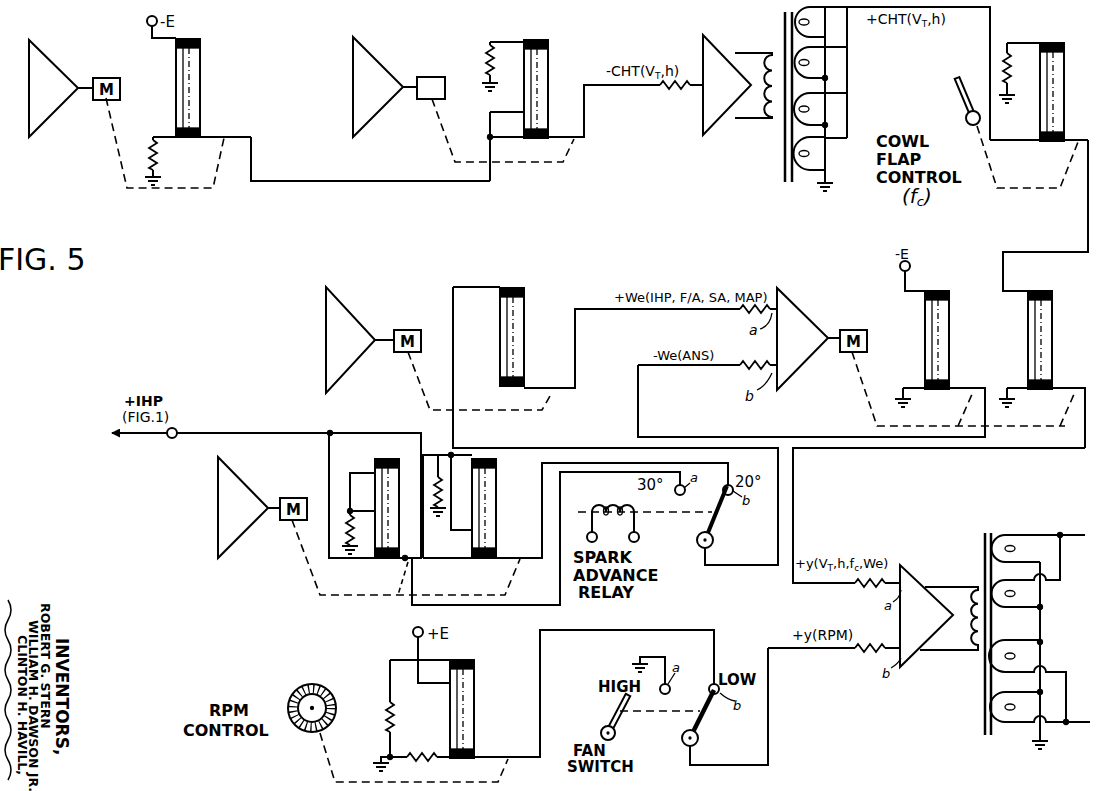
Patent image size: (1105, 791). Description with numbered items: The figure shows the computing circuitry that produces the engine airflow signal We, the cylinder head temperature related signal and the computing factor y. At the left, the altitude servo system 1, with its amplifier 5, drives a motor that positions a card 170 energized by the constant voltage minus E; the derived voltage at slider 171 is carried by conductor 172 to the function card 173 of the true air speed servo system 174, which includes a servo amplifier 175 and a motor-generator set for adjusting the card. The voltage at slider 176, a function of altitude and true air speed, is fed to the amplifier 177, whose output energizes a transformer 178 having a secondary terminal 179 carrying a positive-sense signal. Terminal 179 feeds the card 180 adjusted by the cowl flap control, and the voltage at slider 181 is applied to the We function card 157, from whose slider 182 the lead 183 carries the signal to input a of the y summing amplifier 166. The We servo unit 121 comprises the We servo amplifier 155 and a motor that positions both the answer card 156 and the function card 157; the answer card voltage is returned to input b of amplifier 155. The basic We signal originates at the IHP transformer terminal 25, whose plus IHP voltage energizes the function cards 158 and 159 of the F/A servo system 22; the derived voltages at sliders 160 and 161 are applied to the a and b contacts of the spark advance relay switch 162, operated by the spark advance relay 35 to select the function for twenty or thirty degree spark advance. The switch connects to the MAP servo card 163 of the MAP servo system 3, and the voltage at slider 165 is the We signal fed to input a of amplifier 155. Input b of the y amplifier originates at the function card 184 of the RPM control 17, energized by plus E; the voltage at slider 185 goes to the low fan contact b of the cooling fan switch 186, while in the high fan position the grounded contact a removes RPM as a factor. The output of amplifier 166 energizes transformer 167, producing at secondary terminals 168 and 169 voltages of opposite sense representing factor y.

The altitude servo system 1 is at (74, 86).
The MAP servo system 3 is at (430, 288).
The altitude amplifier 5 is at (47, 58).
The RPM control 17 is at (316, 689).
The F/A servo system 22 is at (304, 471).
The IHP transformer terminal 25 is at (178, 430).
The spark advance relay 35 is at (603, 505).
The We computing unit 121 is at (822, 330).
The We servo amplifier 155 is at (795, 365).
The answer card 156 is at (949, 340).
The function card 157 is at (1045, 323).
The function card 158 is at (393, 470).
The function card 159 is at (495, 485).
The slider 160 is at (390, 578).
The slider 161 is at (501, 557).
The spark advance relay switch 162 is at (715, 521).
The MAP servo card 163 is at (520, 305).
The slider 165 is at (528, 387).
The y summing amplifier 166 is at (920, 578).
The transformer 167 is at (987, 532).
The secondary terminal 168 is at (1060, 533).
The secondary terminal 169 is at (1066, 726).
The card 170 is at (195, 62).
The slider 171 is at (206, 136).
The conductor 172 is at (365, 181).
The function card 173 is at (542, 58).
The true air speed servo system 174 is at (401, 85).
The servo amplifier 175 is at (373, 107).
The slider 176 is at (549, 137).
The amplifier 177 is at (713, 45).
The transformer 178 is at (786, 13).
The secondary terminal 179 is at (847, 14).
The card 180 is at (1072, 29).
The slider 181 is at (1083, 132).
The slider 182 is at (1058, 387).
The lead 183 is at (795, 515).
The function card 184 is at (473, 680).
The slider 185 is at (479, 756).
The cooling fan switch 186 is at (697, 721).